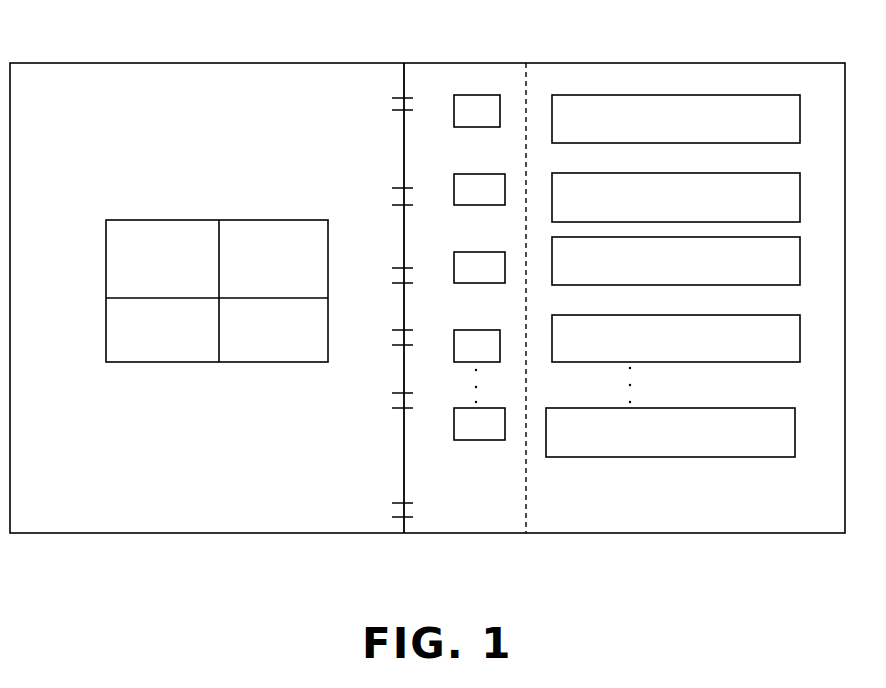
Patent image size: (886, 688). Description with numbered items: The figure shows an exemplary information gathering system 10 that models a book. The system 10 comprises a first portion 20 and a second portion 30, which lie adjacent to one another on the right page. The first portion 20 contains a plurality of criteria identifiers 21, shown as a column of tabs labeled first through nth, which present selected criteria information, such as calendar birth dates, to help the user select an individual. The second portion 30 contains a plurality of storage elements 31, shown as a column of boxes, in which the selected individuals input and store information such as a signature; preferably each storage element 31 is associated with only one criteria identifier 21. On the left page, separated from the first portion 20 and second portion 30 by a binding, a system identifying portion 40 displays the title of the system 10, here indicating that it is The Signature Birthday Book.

The information gathering system 10 is at (51, 27).
The first portion 20 is at (444, 89).
The criteria identifiers 21 is at (459, 278).
The second portion 30 is at (799, 90).
The storage elements 31 is at (673, 276).
The system identifying portion 40 is at (80, 137).